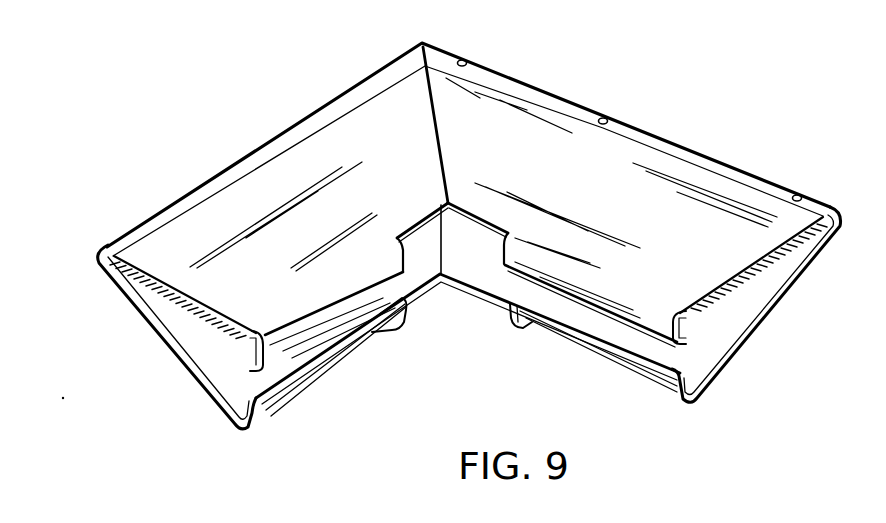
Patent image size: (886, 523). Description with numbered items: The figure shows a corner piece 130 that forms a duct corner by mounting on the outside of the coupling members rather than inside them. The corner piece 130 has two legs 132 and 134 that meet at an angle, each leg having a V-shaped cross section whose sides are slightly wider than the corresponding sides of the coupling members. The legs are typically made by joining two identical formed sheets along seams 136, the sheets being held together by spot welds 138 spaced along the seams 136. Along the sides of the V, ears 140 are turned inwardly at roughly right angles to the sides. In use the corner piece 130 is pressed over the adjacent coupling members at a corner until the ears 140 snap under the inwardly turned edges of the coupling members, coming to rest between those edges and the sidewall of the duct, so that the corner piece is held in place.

The corner piece 130 is at (443, 225).
The leg 132 is at (228, 187).
The leg 134 is at (712, 190).
The seams 136 is at (107, 250).
The spot welds 138 is at (466, 62).
The ears 140 is at (328, 305).